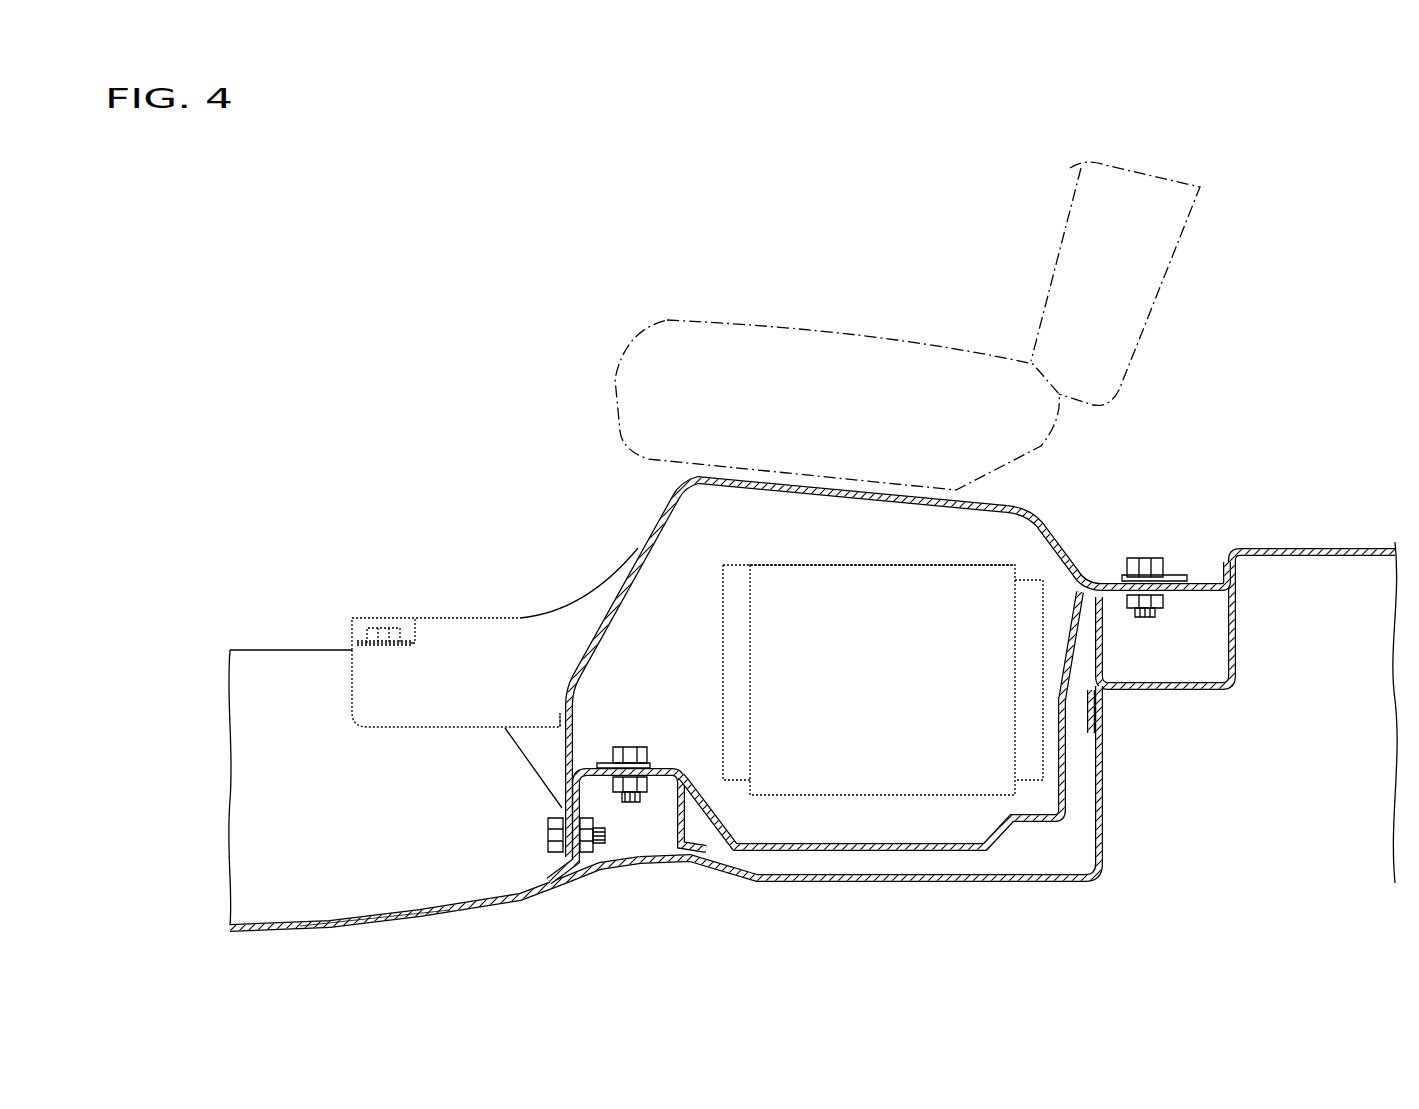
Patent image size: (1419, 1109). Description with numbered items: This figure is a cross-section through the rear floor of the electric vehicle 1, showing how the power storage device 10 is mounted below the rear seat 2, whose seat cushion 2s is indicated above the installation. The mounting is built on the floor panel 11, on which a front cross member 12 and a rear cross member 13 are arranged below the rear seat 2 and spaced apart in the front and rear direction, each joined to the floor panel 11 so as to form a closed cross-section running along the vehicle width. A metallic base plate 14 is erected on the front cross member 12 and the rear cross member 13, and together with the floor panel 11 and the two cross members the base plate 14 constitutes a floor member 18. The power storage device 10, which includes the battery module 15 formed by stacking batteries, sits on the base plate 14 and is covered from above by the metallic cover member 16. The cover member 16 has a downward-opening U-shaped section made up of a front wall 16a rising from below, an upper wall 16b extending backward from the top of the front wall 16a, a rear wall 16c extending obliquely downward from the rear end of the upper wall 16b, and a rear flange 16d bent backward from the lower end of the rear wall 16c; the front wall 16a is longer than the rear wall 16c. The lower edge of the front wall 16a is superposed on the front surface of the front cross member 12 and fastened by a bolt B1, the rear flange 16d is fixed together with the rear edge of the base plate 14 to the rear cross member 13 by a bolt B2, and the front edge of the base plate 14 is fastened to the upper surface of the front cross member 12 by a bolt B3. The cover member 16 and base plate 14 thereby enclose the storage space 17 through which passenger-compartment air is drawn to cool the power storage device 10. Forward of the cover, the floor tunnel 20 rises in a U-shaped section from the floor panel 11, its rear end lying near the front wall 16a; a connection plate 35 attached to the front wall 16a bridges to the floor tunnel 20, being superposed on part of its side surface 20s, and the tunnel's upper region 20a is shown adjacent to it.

The electric vehicle 1 is at (1300, 320).
The rear seat 2 is at (1135, 160).
The seat cushion 2s is at (774, 316).
The power storage device 10 is at (767, 550).
The floor panel 11 is at (287, 920).
The front cross member 12 is at (600, 780).
The rear cross member 13 is at (1103, 657).
The base plate 14 is at (867, 850).
The battery module 15 is at (962, 585).
The cover member 16 is at (876, 572).
The front wall 16a is at (563, 695).
The upper wall 16b is at (830, 479).
The rear wall 16c is at (1068, 545).
The rear flange 16d is at (1183, 570).
The storage space 17 is at (632, 545).
The floor member 18 is at (777, 739).
The floor tunnel 20 is at (321, 739).
The cross member upper wall 20a is at (320, 648).
The side surface 20s is at (360, 800).
The connection plate 35 is at (430, 610).
The bolt B1 is at (548, 838).
The bolt B2 is at (1147, 558).
The bolt B3 is at (625, 747).